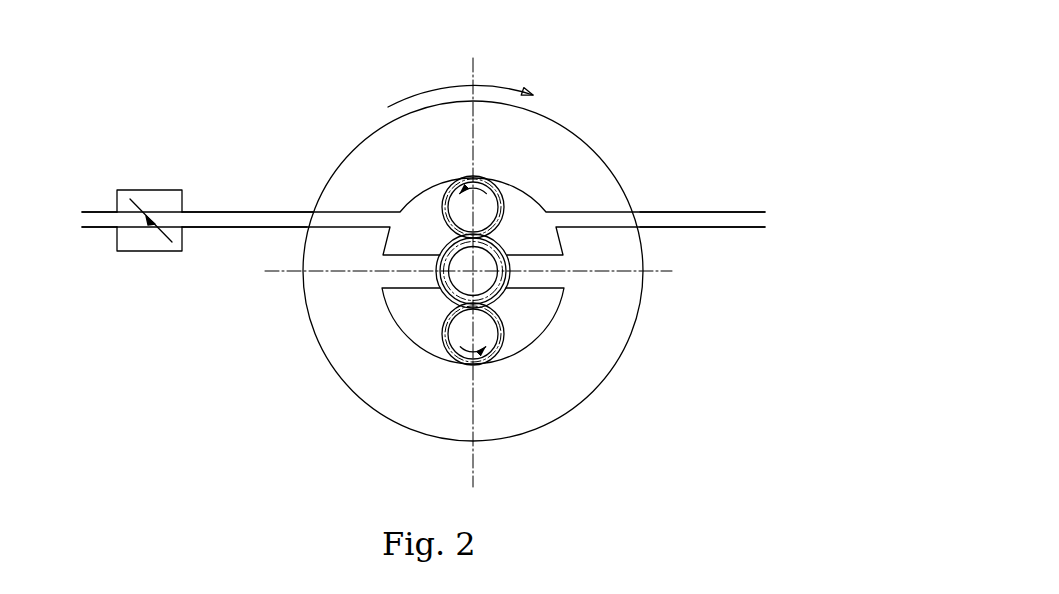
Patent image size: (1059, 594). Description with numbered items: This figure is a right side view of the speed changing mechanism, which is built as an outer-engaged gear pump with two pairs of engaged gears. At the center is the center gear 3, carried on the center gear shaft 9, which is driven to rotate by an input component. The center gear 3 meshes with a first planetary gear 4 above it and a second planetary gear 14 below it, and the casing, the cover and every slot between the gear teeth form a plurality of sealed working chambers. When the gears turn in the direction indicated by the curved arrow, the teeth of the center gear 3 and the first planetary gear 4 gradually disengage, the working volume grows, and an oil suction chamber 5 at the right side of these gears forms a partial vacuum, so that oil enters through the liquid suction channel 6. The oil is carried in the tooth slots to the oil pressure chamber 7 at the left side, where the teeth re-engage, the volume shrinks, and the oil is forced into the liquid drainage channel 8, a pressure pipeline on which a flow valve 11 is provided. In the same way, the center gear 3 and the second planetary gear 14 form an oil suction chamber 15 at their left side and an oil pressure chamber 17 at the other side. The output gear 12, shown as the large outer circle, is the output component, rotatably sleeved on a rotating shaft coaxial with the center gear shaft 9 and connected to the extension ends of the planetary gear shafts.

The center gear 3 is at (499, 245).
The first planetary gear 4 is at (490, 200).
The oil suction chamber 5 is at (523, 208).
The liquid suction channel 6 is at (672, 213).
The oil pressure chamber 7 is at (420, 208).
The liquid drainage channel 8 is at (248, 216).
The center gear shaft 9 is at (481, 277).
The flow valve 11 is at (157, 205).
The output gear 12 is at (382, 380).
The second planetary gear 14 is at (495, 335).
The oil suction chamber 15 is at (412, 303).
The oil pressure chamber 17 is at (528, 308).